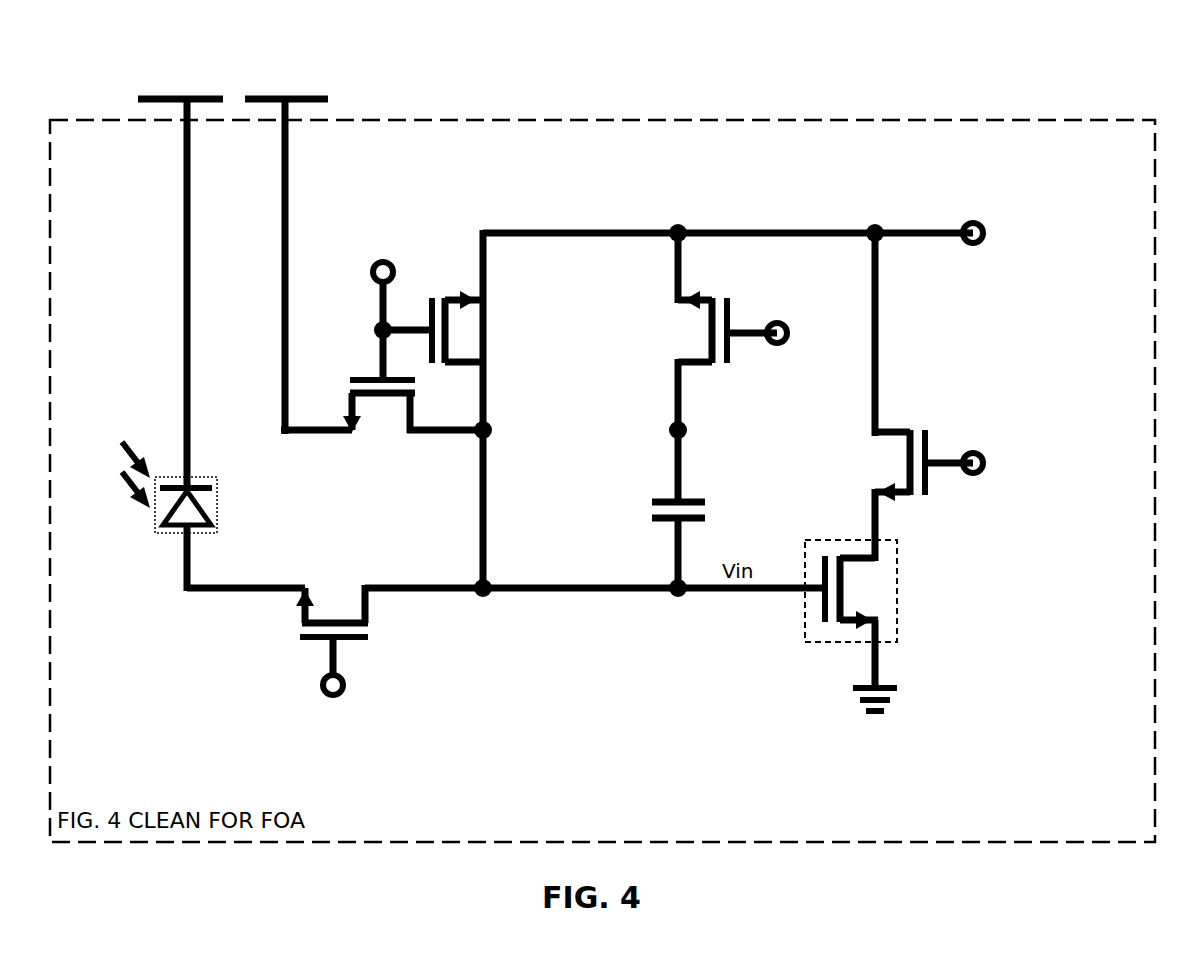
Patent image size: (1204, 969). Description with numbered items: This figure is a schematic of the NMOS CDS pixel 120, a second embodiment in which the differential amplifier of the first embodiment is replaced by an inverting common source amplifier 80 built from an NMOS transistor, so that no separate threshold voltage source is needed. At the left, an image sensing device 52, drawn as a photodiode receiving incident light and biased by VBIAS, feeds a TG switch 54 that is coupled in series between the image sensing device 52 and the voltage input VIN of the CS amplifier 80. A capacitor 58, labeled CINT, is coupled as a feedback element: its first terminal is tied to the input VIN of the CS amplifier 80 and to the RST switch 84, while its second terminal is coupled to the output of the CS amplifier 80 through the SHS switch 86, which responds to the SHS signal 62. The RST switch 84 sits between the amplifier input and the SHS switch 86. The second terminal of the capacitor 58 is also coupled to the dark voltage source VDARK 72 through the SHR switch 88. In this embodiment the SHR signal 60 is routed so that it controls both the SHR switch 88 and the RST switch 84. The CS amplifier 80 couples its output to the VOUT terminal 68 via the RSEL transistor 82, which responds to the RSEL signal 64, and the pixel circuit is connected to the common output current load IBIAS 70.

The VOUT terminal 68 is at (125, 84).
The VDARK 72 is at (350, 88).
The SHR signal 60 is at (352, 225).
The SHR switch 88 is at (390, 412).
The RST switch 84 is at (485, 330).
The SHS switch 86 is at (692, 330).
The SHS signal 62 is at (820, 315).
The capacitor 58 is at (570, 500).
The TG switch 54 is at (352, 730).
The RSEL transistor 82 is at (870, 462).
The RSEL signal 64 is at (1063, 447).
The inverting CS amplifier 80 is at (900, 560).
The image sensing device 52 is at (222, 480).
The IBIAS 70 is at (130, 417).
The NMOS CDS pixel 120 is at (205, 681).